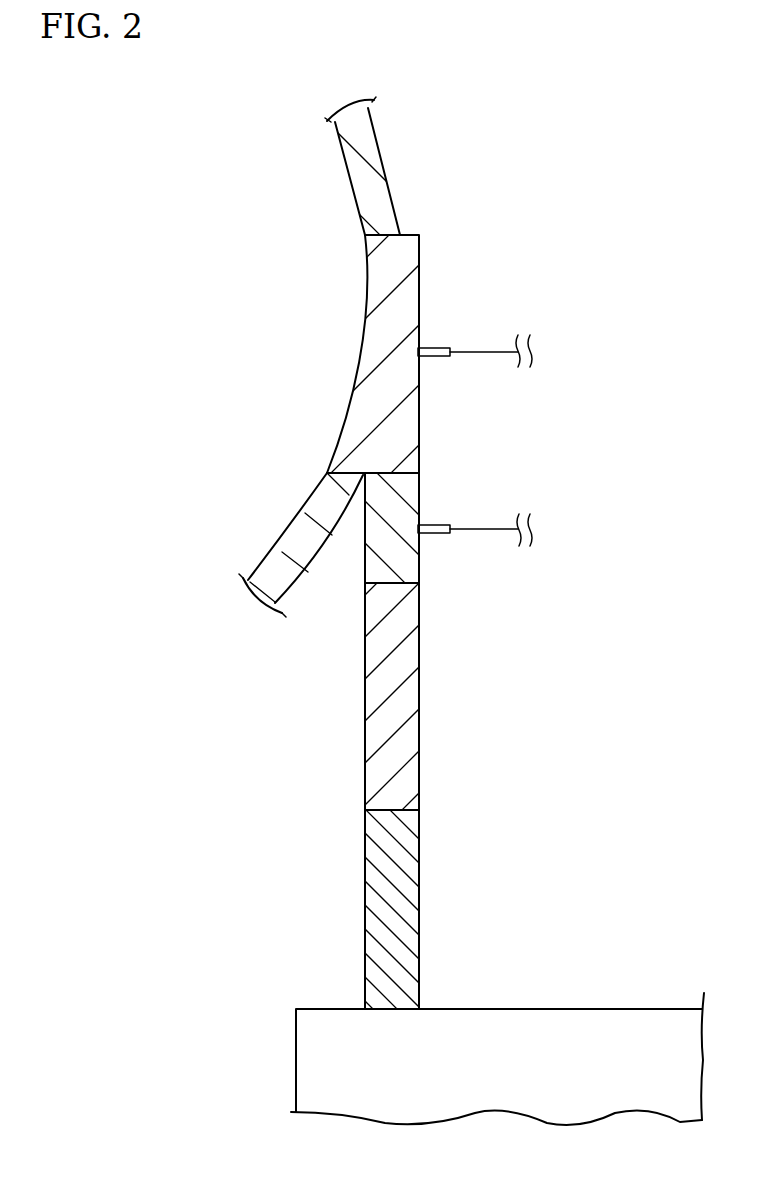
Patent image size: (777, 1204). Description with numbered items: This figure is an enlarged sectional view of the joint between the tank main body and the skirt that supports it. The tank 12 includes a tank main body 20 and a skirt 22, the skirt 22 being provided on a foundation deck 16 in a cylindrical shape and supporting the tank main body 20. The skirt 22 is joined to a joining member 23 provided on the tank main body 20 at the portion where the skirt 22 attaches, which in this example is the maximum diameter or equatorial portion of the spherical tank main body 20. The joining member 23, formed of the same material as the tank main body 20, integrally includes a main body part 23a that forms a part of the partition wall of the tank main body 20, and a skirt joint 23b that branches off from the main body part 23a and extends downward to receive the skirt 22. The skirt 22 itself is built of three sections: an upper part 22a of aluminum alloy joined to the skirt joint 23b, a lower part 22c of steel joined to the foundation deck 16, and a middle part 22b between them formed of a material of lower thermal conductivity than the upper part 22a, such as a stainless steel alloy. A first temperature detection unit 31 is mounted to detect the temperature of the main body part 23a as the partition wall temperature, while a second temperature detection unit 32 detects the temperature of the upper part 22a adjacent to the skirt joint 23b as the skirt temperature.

The tank 12 is at (377, 130).
The tank main body 20 is at (387, 160).
The joining member 23 is at (420, 305).
The main body part 23a is at (364, 340).
The skirt joint 23b is at (420, 428).
The first temperature detection unit 31 is at (435, 357).
The second temperature detection unit 32 is at (437, 524).
The skirt 22 is at (419, 652).
The upper part 22a is at (420, 562).
The middle part 22b is at (419, 728).
The lower part 22c is at (419, 897).
The foundation deck 16 is at (621, 1009).